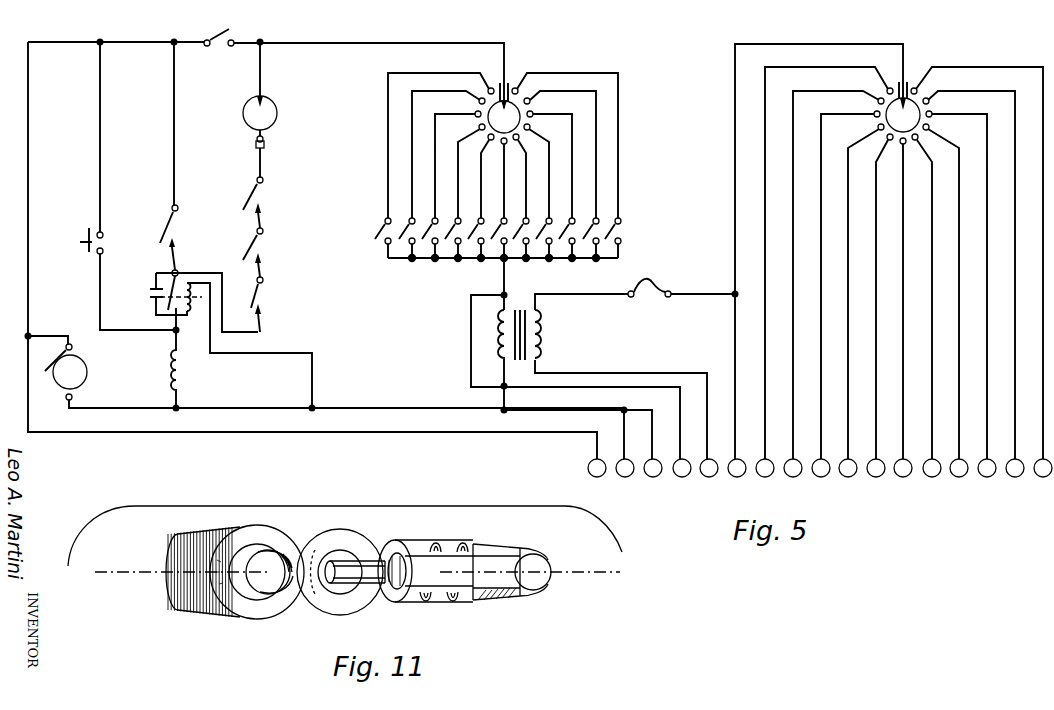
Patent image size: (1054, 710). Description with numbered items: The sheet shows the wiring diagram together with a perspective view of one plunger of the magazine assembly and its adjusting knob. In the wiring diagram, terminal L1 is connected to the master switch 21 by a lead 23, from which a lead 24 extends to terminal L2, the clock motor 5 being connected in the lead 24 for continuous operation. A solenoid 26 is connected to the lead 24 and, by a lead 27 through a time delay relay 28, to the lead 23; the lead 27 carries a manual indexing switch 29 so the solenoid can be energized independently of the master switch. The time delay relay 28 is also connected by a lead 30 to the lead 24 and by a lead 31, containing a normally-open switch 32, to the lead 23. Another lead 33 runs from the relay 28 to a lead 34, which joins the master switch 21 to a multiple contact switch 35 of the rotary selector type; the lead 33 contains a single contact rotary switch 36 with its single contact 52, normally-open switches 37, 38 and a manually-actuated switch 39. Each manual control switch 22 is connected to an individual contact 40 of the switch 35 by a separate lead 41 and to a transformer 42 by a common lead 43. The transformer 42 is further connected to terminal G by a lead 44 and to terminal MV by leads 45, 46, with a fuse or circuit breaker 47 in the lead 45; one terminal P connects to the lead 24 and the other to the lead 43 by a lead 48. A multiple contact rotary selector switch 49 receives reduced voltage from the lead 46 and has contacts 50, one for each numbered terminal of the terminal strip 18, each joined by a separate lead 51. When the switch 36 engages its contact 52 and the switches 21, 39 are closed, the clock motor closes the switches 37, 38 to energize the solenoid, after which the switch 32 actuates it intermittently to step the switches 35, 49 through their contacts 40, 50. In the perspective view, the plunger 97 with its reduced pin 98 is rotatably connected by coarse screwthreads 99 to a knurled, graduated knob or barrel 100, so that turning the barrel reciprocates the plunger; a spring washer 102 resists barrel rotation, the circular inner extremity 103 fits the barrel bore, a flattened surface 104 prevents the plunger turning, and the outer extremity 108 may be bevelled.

In FIG. 5, the clock motor 5 is at (54, 380).
In FIG. 5, the terminal strip 18 is at (588, 465).
In FIG. 5, the master switch 21 is at (215, 35).
In FIG. 5, the manual control switch 22 is at (366, 244).
In FIG. 5, the lead 23 is at (28, 229).
In FIG. 5, the lead 24 is at (386, 406).
In FIG. 5, the solenoid 26 is at (169, 382).
In FIG. 5, the lead 27 is at (94, 107).
In FIG. 5, the time delay relay 28 is at (153, 279).
In FIG. 5, the manual indexing switch 29 is at (83, 241).
In FIG. 5, the lead 30 is at (309, 389).
In FIG. 5, the lead 31 is at (168, 110).
In FIG. 5, the normally-open switch 32 is at (164, 230).
In FIG. 5, the lead 33 is at (266, 66).
In FIG. 5, the lead 34 is at (380, 42).
In FIG. 5, the multiple contact switch 35 is at (508, 84).
In FIG. 5, the single contact rotary switch 36 is at (242, 106).
In FIG. 5, the normally-open switch 37 is at (246, 191).
In FIG. 5, the normally-open switch 38 is at (253, 238).
In FIG. 5, the manually-actuated switch 39 is at (255, 298).
In FIG. 5, the contact 40 is at (479, 127).
In FIG. 5, the lead 41 is at (387, 129).
In FIG. 5, the transformer 42 is at (471, 336).
In FIG. 5, the common lead 43 is at (504, 278).
In FIG. 5, the lead 44 is at (579, 373).
In FIG. 5, the lead 45 is at (567, 294).
In FIG. 5, the lead 46 is at (735, 240).
In FIG. 5, the fuse or circuit breaker 47 is at (661, 291).
In FIG. 5, the lead 48 is at (569, 410).
In FIG. 5, the rotary selector switch 49 is at (908, 82).
In FIG. 5, the contact 50 is at (875, 126).
In FIG. 5, the lead 51 is at (932, 259).
In FIG. 5, the single contact 52 is at (266, 143).
In FIG. 11, the plunger 97 is at (490, 604).
In FIG. 11, the pin 98 is at (348, 590).
In FIG. 11, the coarse screwthreads 99 is at (280, 554).
In FIG. 11, the knob or tubular barrel 100 is at (165, 547).
In FIG. 11, the spring washer 102 is at (332, 606).
In FIG. 11, the inner extremity 103 is at (398, 539).
In FIG. 11, the flattened surface 104 is at (438, 600).
In FIG. 11, the outer extremity 108 is at (550, 590).